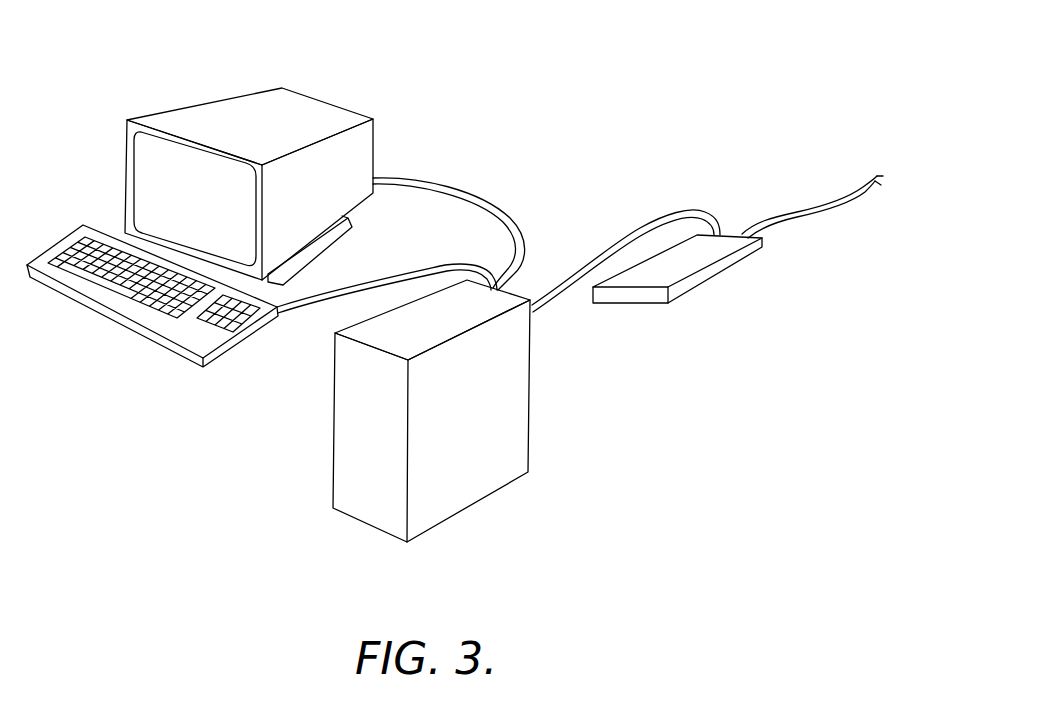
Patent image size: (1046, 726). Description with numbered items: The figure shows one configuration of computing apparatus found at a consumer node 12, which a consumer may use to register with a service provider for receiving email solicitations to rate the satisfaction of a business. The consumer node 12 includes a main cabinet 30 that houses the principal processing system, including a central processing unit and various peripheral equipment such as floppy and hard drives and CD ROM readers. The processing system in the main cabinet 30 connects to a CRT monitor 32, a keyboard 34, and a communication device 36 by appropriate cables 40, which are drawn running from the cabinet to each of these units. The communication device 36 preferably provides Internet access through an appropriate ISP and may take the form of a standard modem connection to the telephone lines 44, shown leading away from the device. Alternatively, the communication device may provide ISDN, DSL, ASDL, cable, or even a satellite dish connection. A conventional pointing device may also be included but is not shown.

The consumer node 12 is at (630, 45).
The main cabinet 30 is at (530, 408).
The CRT monitor 32 is at (338, 100).
The keyboard 34 is at (167, 353).
The communication device 36 is at (707, 282).
The cables 40 is at (455, 193).
The telephone lines 44 is at (842, 212).